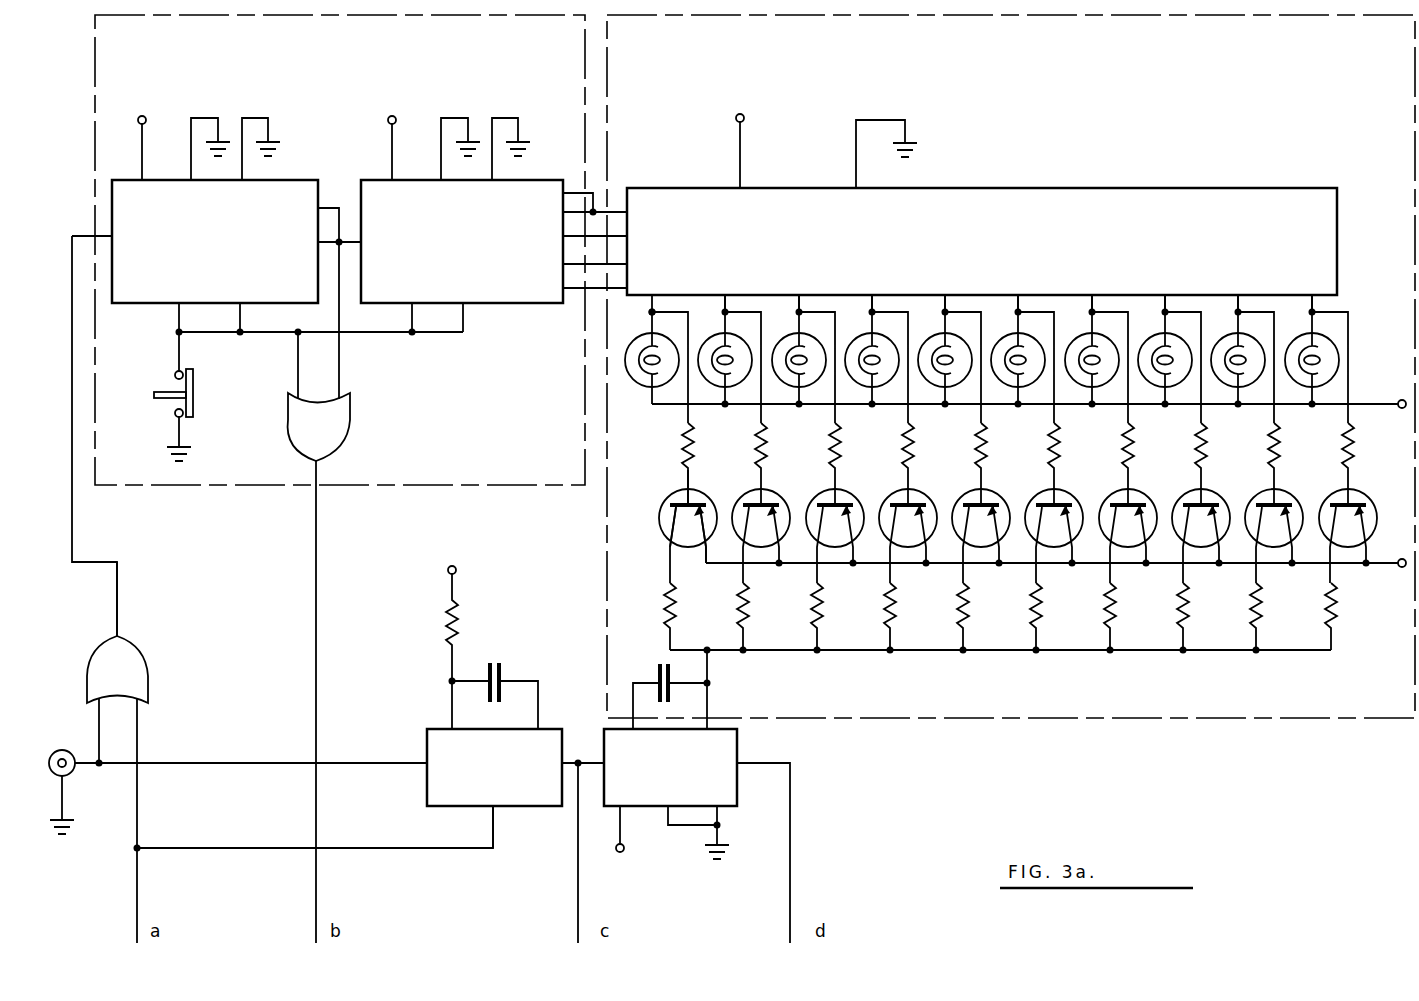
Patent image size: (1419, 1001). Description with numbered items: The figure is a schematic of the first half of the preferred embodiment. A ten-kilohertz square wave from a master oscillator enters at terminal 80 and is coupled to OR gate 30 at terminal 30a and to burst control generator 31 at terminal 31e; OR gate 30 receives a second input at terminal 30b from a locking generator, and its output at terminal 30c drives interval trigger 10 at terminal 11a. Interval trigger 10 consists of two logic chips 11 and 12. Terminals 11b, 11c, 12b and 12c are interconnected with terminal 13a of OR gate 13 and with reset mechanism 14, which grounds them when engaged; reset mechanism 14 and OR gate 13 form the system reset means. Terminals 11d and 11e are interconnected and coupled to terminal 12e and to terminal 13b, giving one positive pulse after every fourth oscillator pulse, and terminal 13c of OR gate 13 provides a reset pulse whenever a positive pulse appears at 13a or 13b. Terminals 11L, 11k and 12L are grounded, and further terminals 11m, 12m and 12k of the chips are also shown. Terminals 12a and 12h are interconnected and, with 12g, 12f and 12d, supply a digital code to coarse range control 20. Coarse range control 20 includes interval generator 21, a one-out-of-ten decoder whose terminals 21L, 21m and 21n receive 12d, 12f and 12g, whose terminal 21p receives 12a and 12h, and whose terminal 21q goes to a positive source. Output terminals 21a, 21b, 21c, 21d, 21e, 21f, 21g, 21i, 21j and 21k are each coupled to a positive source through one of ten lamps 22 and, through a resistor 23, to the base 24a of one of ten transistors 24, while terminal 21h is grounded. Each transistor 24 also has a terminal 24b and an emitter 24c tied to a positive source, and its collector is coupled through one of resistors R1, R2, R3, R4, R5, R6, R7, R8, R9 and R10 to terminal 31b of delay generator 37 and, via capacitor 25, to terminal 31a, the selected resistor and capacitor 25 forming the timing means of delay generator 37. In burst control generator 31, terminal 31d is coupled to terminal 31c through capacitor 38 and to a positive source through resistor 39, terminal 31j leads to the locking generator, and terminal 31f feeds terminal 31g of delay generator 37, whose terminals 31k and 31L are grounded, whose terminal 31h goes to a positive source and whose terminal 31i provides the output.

The interval trigger 10 is at (226, 496).
The logic chip 11 is at (152, 310).
The terminal 11a is at (111, 431).
The terminal 11b is at (182, 306).
The terminal 11c is at (242, 306).
The terminal 11d is at (306, 220).
The terminal 11e is at (317, 242).
The terminal 11k is at (255, 160).
The terminal 11L is at (203, 160).
The supply terminal of circuit 11 11m is at (137, 144).
The logic chip 12 is at (537, 312).
The terminal 12a is at (556, 196).
The terminal 12b is at (409, 307).
The terminal 12c is at (461, 307).
The terminal 12d is at (572, 289).
The terminal 12e is at (382, 244).
The terminal 12f is at (572, 263).
The terminal 12g is at (572, 239).
The terminal 12h is at (573, 211).
The ground terminal of circuit 12 12k is at (495, 160).
The terminal 12L is at (446, 160).
The supply terminal of circuit 12 12m is at (385, 144).
The OR gate 13 is at (329, 434).
The terminal 13a is at (286, 384).
The terminal 13b is at (338, 388).
The terminal 13c is at (318, 470).
The reset mechanism 14 is at (198, 396).
The coarse range control 20 is at (1184, 728).
The interval generator 21 is at (1146, 158).
The terminal 21a is at (658, 298).
The terminal 21b is at (735, 290).
The terminal 21c is at (807, 290).
The terminal 21d is at (879, 290).
The terminal 21e is at (952, 290).
The terminal 21f is at (1025, 290).
The terminal 21g is at (1099, 290).
The terminal 21h is at (878, 167).
The terminal 21i is at (1173, 290).
The terminal 21j is at (1245, 290).
The terminal 21k is at (1319, 290).
The terminal 21L is at (652, 288).
The terminal 21m is at (656, 265).
The terminal 21n is at (653, 238).
The terminal 21p is at (653, 213).
The terminal 21q is at (740, 153).
The lamps 22 is at (1014, 359).
The resistor 23 is at (996, 457).
The transistors 24 is at (1034, 523).
The base 24a is at (668, 491).
The transistor emitter 24b is at (672, 521).
The emitter 24c is at (698, 549).
The capacitor 25 is at (654, 670).
The OR gate 30 is at (133, 687).
The terminal 30a is at (96, 707).
The terminal 30b is at (140, 705).
The terminal 30c is at (120, 632).
The burst control generator 31 is at (511, 810).
The terminal 31a is at (636, 718).
The terminal 31b is at (706, 718).
The terminal 31c is at (533, 744).
The terminal 31d is at (449, 744).
The terminal 31e is at (449, 765).
The terminal 31f is at (560, 849).
The terminal 31g is at (622, 765).
The terminal 31h is at (628, 831).
The terminal 31i is at (741, 849).
The terminal 31j is at (491, 815).
The terminal 31k is at (685, 804).
The terminal 31L is at (712, 821).
The delay generator 37 is at (729, 810).
The capacitor 38 is at (502, 672).
The resistor 39 is at (462, 626).
The terminal 80 is at (76, 777).
The resistor R1 is at (685, 616).
The resistor R2 is at (758, 616).
The resistor R3 is at (832, 616).
The resistor R4 is at (905, 616).
The resistor R5 is at (978, 616).
The resistor R6 is at (1051, 616).
The resistor R7 is at (1125, 616).
The resistor R8 is at (1198, 616).
The resistor R9 is at (1271, 616).
The resistor R10 is at (1352, 616).